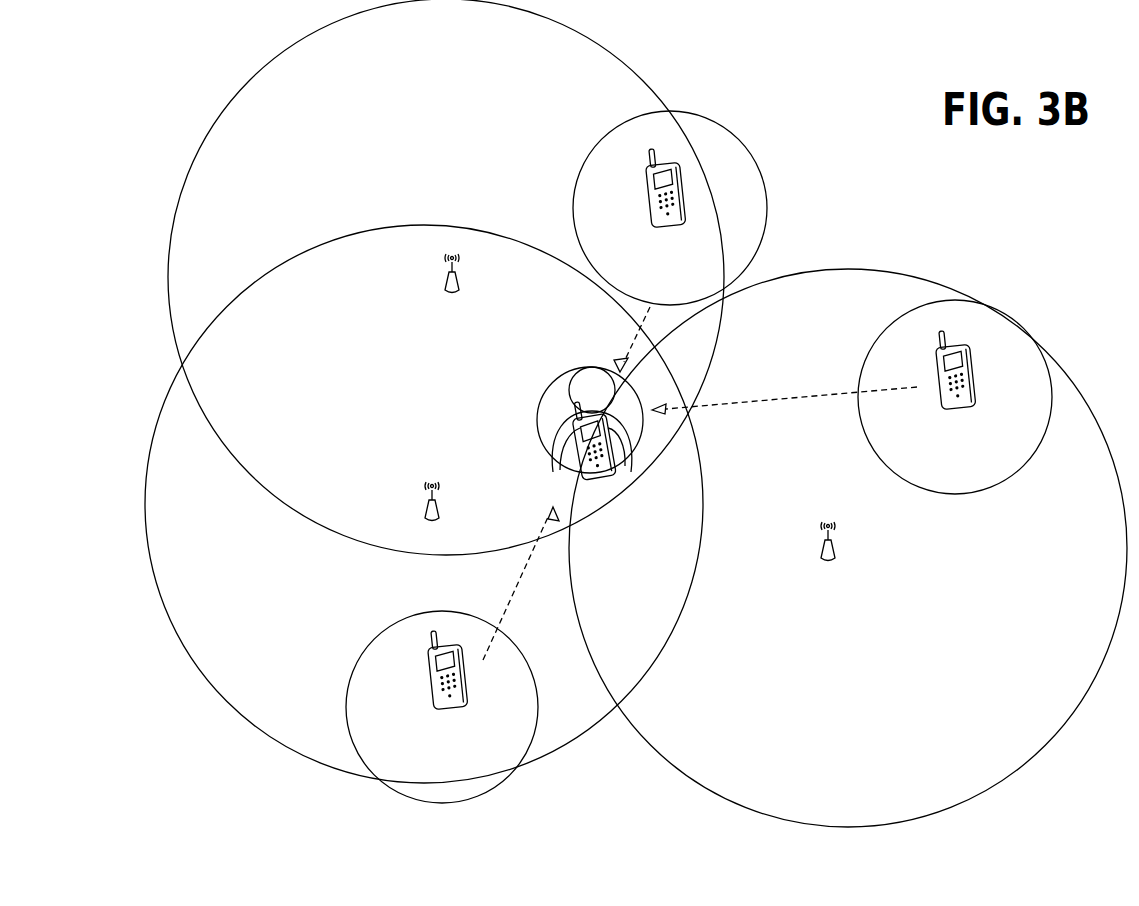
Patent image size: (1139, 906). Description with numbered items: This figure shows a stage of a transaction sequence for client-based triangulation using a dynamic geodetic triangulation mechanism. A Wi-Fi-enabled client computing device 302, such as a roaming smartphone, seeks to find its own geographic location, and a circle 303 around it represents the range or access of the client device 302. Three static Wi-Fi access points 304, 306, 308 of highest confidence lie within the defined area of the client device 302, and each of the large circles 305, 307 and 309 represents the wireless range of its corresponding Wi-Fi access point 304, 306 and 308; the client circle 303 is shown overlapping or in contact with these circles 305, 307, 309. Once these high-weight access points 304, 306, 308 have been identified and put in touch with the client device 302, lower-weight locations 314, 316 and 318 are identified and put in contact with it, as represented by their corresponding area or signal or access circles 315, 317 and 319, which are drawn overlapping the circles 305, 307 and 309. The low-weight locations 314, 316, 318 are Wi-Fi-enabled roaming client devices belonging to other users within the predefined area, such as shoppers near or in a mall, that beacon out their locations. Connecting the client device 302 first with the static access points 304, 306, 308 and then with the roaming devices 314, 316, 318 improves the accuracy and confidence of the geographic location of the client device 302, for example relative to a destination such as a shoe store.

The Wi-Fi-enabled client computing device 302 is at (563, 433).
The circle 303 is at (545, 390).
The Wi-Fi access point 304 is at (425, 325).
The circle 305 is at (602, 47).
The Wi-Fi access point 306 is at (410, 517).
The circle 307 is at (578, 735).
The Wi-Fi access point 308 is at (840, 547).
The circle 309 is at (907, 271).
The low-weight location 314 is at (692, 200).
The circle 315 is at (727, 132).
The low-weight location 316 is at (420, 674).
The circle 317 is at (346, 705).
The low-weight location 318 is at (967, 468).
The circle 319 is at (1020, 473).